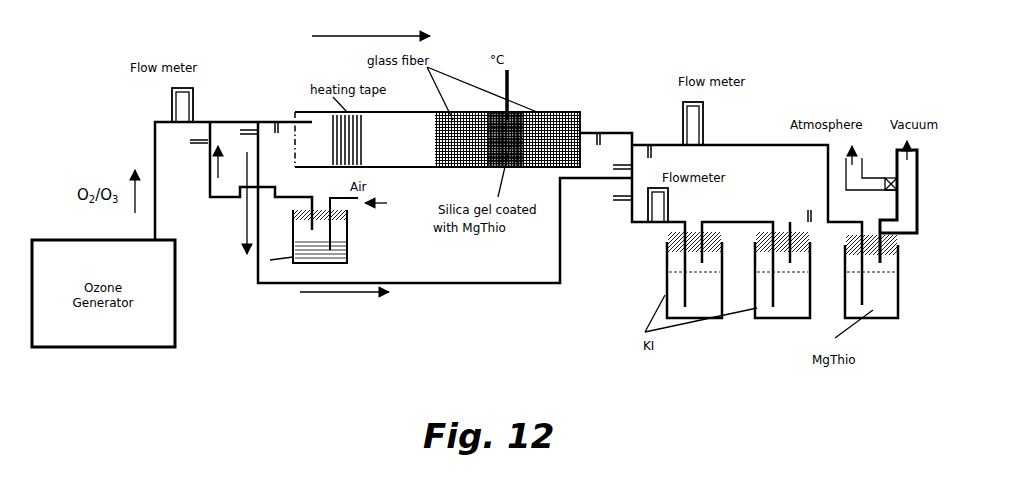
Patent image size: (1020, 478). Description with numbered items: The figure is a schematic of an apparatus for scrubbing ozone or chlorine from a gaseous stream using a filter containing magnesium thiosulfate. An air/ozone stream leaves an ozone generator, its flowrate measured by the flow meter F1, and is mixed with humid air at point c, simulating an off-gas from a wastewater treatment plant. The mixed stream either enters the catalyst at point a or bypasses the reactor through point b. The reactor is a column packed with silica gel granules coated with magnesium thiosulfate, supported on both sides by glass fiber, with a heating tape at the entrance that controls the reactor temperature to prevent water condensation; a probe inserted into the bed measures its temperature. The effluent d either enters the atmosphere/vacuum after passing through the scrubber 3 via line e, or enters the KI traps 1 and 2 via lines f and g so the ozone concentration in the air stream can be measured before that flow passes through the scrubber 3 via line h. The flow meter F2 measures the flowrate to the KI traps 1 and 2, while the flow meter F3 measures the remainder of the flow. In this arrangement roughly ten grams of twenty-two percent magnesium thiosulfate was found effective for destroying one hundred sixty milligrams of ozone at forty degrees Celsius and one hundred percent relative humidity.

The catalyst entry point a is at (275, 118).
The reactor bypass point b is at (243, 133).
The mixing point c is at (199, 150).
The effluent d is at (603, 130).
The scrubber line e is at (650, 143).
The KI trap line f is at (618, 167).
The KI trap line g is at (617, 207).
The scrubber line h is at (805, 207).
The flow meter F1 is at (170, 105).
The flow meter F2 is at (670, 205).
The flow meter F3 is at (706, 120).
The KI trap 1 is at (694, 275).
The KI trap 2 is at (782, 275).
The scrubber 3 is at (871, 276).